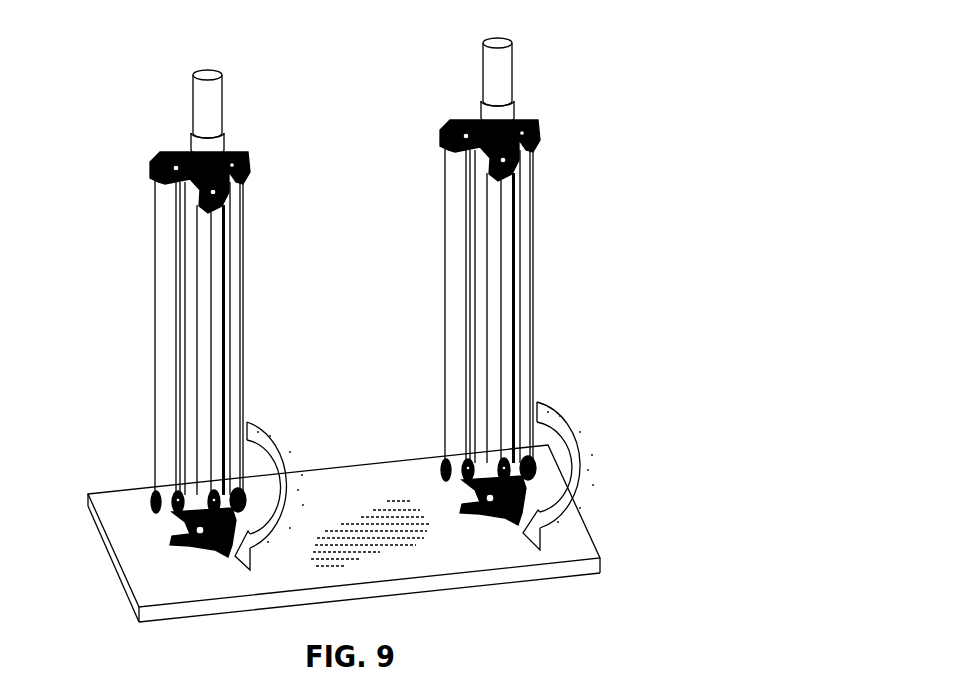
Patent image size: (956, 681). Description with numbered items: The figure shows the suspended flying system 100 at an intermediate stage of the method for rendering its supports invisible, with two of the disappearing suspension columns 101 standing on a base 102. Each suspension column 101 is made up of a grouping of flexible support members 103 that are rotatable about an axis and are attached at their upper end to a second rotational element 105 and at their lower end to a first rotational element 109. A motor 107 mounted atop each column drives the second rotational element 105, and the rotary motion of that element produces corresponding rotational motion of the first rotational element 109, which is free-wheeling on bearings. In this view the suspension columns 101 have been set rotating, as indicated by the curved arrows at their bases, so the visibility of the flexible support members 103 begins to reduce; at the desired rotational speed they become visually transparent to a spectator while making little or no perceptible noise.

The suspended flying system 100 is at (138, 110).
The suspension column 101 is at (127, 238).
The base plate 102 is at (368, 480).
The flexible support member 103 is at (243, 360).
The second rotational element 105 is at (247, 167).
The motor 107 is at (220, 110).
The first rotational element 109 is at (158, 492).